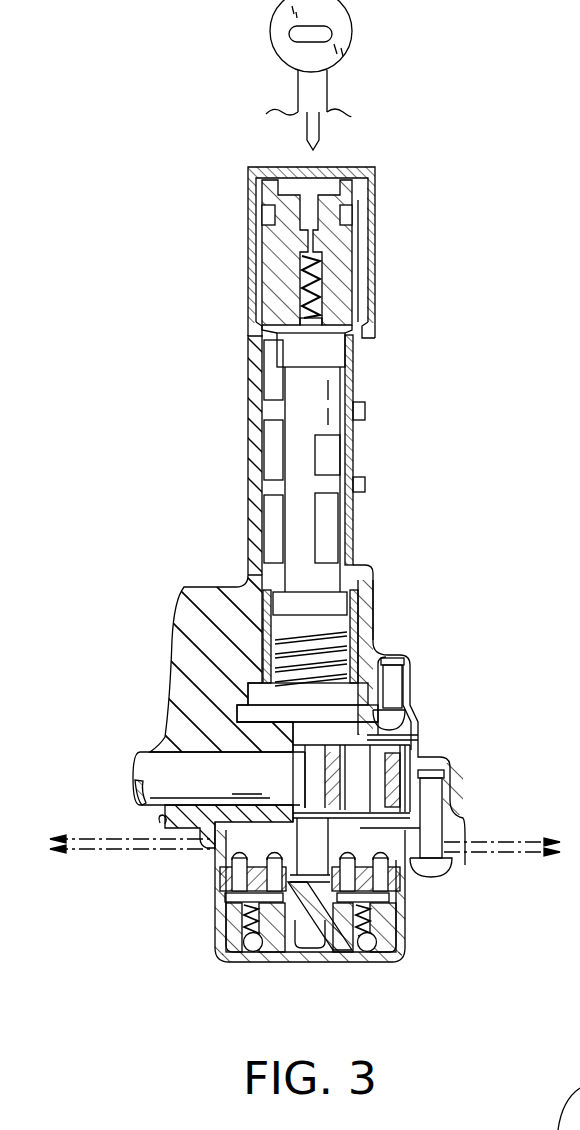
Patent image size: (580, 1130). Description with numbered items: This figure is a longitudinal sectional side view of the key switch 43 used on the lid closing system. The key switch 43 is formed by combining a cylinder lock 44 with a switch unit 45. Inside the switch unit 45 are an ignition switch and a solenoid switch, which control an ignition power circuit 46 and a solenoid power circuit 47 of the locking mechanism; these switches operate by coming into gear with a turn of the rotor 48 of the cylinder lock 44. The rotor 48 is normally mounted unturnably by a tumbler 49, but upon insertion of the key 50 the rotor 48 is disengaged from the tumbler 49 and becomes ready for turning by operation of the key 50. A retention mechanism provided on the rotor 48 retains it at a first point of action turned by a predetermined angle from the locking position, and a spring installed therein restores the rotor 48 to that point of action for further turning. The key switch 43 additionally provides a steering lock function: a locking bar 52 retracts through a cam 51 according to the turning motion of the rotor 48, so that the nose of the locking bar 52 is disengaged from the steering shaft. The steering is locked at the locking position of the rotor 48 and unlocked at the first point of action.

The key switch 43 is at (244, 380).
The cylinder lock 44 is at (377, 214).
The switch unit 45 is at (267, 958).
The ignition power circuit 46 is at (122, 848).
The solenoid power circuit 47 is at (490, 850).
The rotor 48 is at (333, 282).
The tumbler 49 is at (306, 266).
The key 50 is at (343, 43).
The cam 51 is at (385, 704).
The locking bar 52 is at (145, 757).